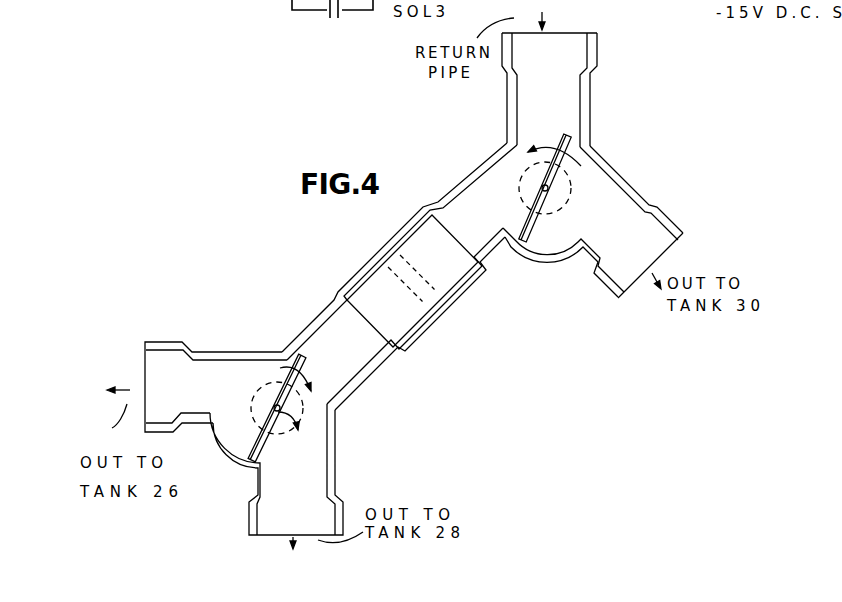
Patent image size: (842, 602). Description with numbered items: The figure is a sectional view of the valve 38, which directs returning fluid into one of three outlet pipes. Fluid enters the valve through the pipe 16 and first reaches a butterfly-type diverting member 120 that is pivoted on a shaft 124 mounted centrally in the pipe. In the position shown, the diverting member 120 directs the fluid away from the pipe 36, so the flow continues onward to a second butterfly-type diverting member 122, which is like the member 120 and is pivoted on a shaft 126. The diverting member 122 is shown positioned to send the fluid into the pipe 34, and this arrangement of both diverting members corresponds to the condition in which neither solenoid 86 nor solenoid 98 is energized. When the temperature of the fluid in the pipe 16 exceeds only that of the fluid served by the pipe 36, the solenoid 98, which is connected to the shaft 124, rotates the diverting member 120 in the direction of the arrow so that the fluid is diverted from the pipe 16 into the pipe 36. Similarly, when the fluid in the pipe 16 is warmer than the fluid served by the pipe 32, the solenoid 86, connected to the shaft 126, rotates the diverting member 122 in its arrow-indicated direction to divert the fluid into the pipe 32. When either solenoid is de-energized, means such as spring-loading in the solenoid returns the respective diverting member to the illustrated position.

The pipe 16 is at (571, 43).
The valve 38 is at (633, 160).
The pipe 36 is at (658, 245).
The solenoid 98 is at (484, 161).
The butterfly-type diverting member 120 is at (542, 236).
The shaft 124 is at (523, 219).
The pipe 32 is at (155, 370).
The pipe 34 is at (283, 520).
The solenoid 86 is at (259, 352).
The butterfly-type diverting member 122 is at (248, 445).
The shaft 126 is at (297, 434).